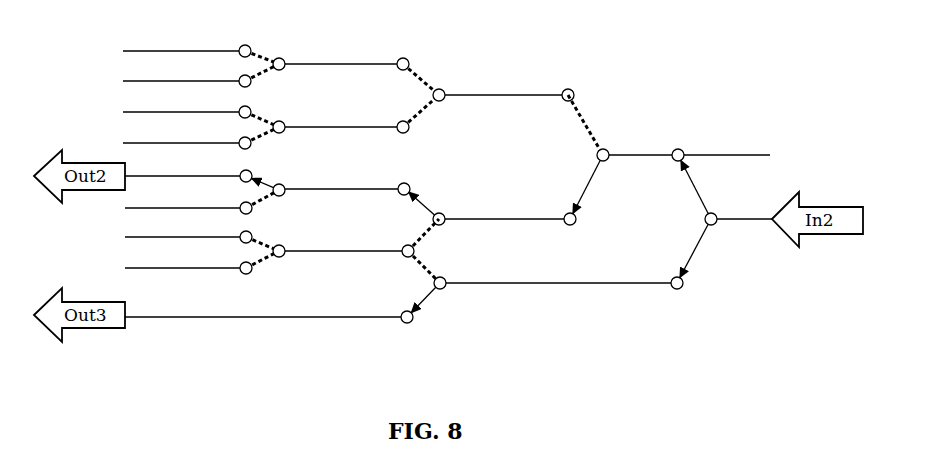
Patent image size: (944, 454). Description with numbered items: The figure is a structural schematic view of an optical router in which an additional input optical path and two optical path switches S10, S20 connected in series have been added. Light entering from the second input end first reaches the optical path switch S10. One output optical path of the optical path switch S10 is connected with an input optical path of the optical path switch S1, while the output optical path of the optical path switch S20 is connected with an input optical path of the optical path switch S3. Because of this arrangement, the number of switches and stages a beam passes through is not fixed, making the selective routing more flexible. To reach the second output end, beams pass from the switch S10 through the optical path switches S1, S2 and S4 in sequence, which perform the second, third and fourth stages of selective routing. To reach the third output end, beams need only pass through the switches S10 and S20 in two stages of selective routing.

The optical path switch S1 is at (624, 160).
The optical path switch S2 is at (423, 201).
The optical path switch S3 is at (265, 249).
The optical path switch S4 is at (265, 189).
The optical path switch S10 is at (708, 224).
The optical path switch S20 is at (436, 271).